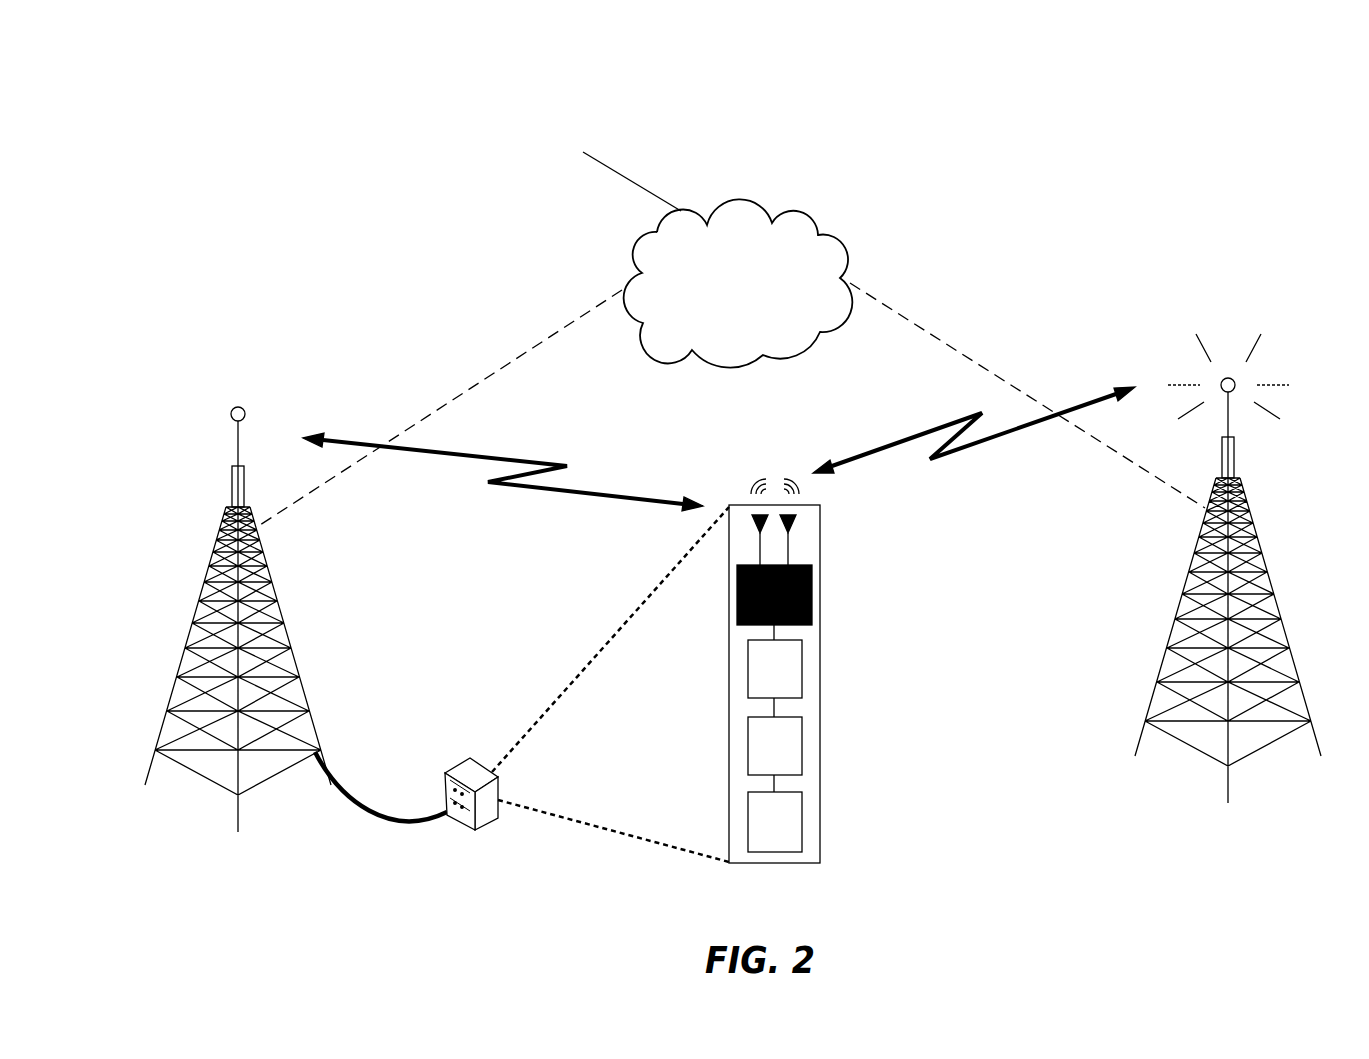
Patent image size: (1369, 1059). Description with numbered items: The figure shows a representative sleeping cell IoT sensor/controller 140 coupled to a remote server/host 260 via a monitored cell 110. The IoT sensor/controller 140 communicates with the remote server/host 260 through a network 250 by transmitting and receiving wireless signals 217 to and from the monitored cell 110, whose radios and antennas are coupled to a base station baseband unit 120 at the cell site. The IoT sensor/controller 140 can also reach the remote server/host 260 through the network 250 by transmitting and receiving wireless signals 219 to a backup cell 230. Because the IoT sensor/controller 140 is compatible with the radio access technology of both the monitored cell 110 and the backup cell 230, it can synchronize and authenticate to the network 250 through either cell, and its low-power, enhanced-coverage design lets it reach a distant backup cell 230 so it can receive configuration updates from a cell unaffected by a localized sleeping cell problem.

The monitored cell 110 is at (242, 455).
The base station baseband unit 120 is at (476, 833).
The IoT sensor/controller 140 is at (823, 755).
The wireless signals 217 is at (463, 458).
The wireless signals 219 is at (1007, 432).
The backup cell 230 is at (1135, 738).
The network 250 is at (837, 236).
The remote server/host 260 is at (582, 128).